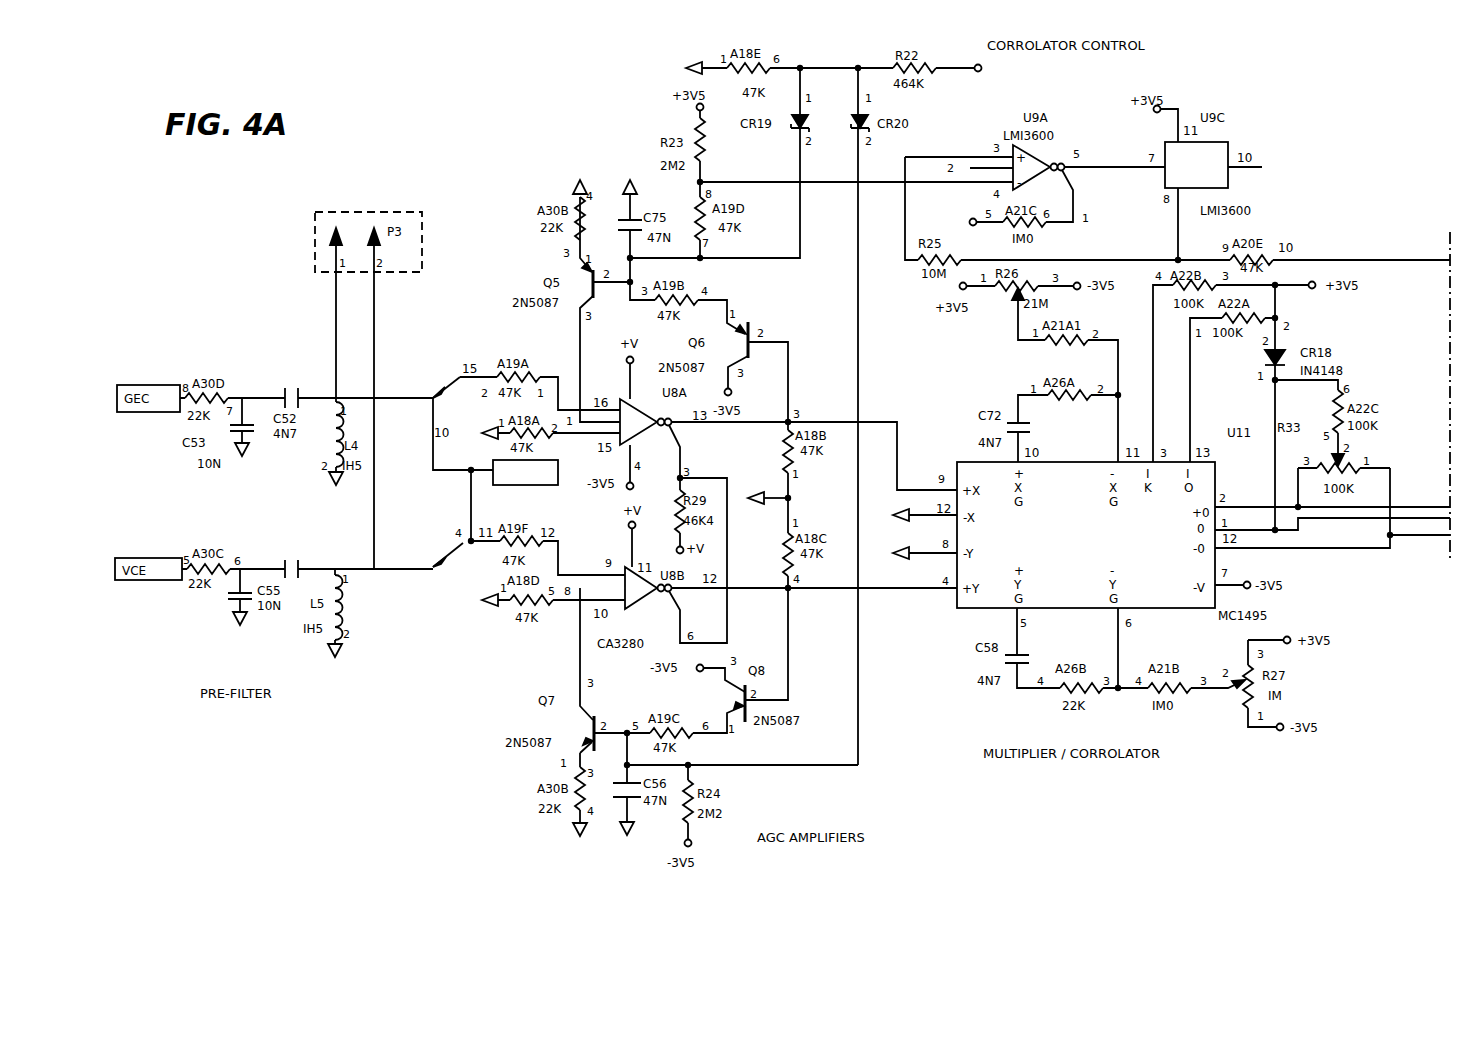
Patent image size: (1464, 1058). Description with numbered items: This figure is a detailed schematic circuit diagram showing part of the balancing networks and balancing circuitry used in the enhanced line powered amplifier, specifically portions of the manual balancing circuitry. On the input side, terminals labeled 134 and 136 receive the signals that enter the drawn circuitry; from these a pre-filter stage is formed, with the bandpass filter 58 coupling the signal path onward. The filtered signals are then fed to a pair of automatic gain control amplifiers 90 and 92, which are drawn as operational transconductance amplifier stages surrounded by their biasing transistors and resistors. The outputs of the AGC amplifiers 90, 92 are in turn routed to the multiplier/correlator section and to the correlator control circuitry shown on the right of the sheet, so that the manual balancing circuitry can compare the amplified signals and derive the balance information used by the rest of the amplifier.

The GEC input terminal 134 is at (182, 411).
The VCE input terminal 136 is at (182, 580).
The bandpass filter 58 is at (301, 553).
The automatic gain control amplifier 90 is at (751, 453).
The automatic gain control amplifier 92 is at (718, 625).